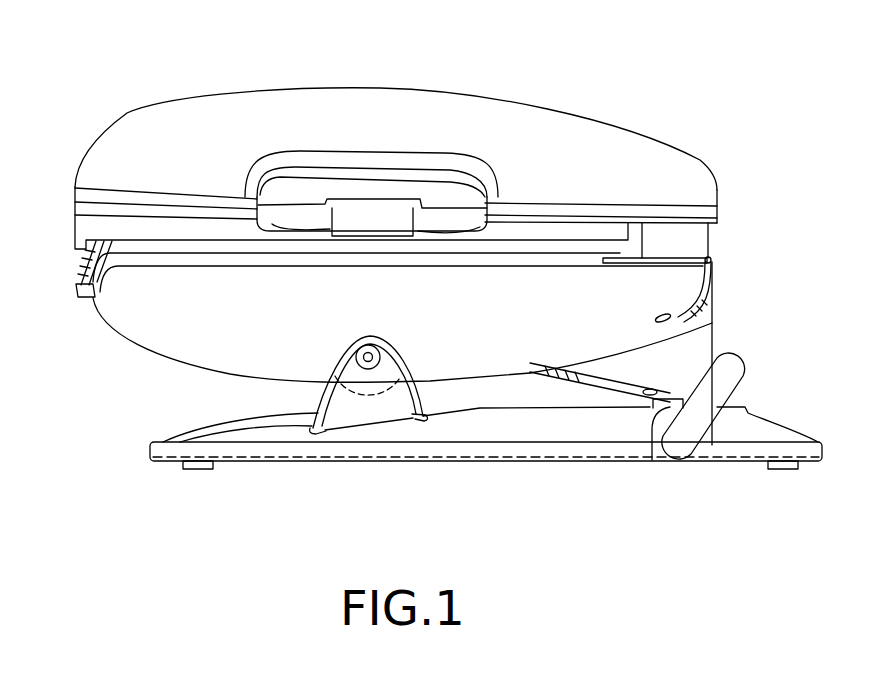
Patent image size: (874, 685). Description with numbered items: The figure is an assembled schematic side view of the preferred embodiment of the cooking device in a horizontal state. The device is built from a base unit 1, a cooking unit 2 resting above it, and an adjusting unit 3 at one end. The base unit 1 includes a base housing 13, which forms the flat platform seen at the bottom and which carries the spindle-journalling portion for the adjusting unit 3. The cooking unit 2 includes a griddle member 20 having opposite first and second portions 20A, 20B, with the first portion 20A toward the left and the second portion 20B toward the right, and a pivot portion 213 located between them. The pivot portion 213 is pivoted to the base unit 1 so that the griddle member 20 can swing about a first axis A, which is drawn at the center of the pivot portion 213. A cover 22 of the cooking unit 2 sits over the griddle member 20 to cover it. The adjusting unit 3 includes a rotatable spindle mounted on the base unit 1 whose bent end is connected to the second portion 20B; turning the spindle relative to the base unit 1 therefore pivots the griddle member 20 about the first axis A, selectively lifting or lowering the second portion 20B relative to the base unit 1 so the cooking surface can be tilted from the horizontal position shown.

The base unit 1 is at (486, 473).
The base housing 13 is at (621, 427).
The cooking unit 2 is at (396, 146).
The cover 22 is at (640, 155).
The griddle member 20 is at (414, 343).
The first portion 20A is at (128, 308).
The second portion 20B is at (683, 287).
The pivot portion 213 is at (351, 432).
The first axis A is at (368, 357).
The adjusting unit 3 is at (727, 368).